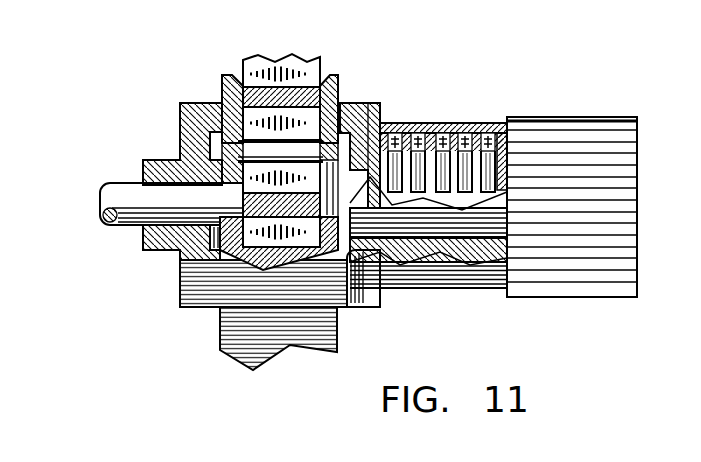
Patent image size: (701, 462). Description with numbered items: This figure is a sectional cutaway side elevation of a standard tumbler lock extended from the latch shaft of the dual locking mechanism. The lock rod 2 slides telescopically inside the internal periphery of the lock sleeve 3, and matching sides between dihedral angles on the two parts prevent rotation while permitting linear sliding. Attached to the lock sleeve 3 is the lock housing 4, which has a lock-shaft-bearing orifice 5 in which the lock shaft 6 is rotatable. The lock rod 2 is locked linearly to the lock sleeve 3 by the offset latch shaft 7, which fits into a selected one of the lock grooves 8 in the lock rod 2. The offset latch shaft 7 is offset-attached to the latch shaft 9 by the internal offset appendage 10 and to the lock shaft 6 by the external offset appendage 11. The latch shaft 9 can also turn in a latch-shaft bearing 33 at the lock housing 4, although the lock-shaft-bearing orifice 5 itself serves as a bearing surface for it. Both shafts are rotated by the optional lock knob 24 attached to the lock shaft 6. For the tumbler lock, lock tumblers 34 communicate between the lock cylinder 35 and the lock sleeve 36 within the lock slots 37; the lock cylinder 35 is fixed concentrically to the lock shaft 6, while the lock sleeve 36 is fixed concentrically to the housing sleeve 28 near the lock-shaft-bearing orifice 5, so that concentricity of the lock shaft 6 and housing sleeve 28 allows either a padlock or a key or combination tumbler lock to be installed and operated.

The lock rod 2 is at (272, 58).
The lock sleeve 3 is at (240, 338).
The lock housing 4 is at (213, 282).
The lock-shaft-bearing orifice 5 is at (355, 307).
The lock shaft 6 is at (417, 253).
The offset latch shaft 7 is at (277, 147).
The lock grooves 8 is at (237, 87).
The latch shaft 9 is at (108, 213).
The internal offset appendage 10 is at (212, 108).
The external offset appendage 11 is at (338, 77).
The lock knob 24 is at (563, 118).
The housing sleeve 28 is at (367, 103).
The latch-shaft bearing 33 is at (143, 235).
The lock tumblers 34 is at (397, 150).
The lock cylinder 35 is at (423, 203).
The lock sleeve 36 is at (455, 150).
The lock slots 37 is at (508, 140).